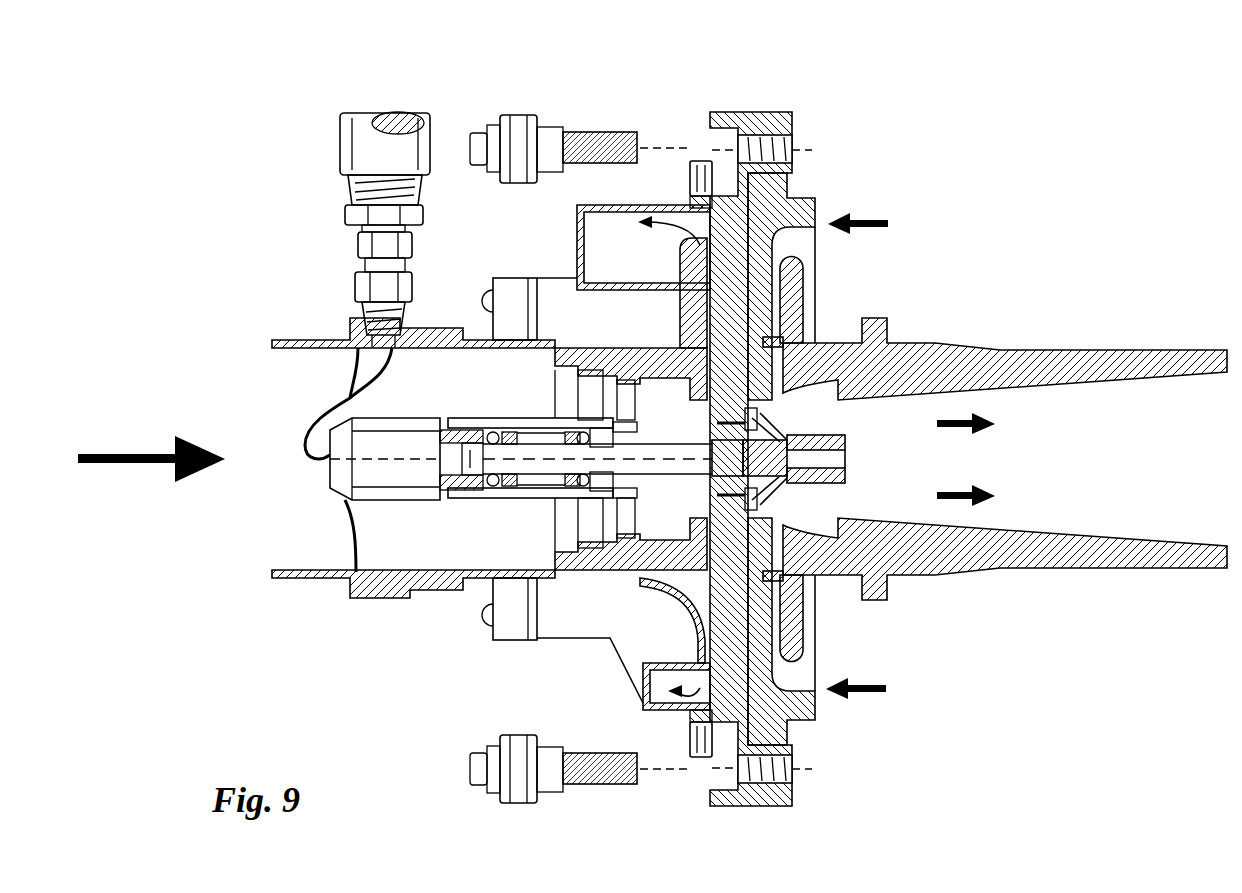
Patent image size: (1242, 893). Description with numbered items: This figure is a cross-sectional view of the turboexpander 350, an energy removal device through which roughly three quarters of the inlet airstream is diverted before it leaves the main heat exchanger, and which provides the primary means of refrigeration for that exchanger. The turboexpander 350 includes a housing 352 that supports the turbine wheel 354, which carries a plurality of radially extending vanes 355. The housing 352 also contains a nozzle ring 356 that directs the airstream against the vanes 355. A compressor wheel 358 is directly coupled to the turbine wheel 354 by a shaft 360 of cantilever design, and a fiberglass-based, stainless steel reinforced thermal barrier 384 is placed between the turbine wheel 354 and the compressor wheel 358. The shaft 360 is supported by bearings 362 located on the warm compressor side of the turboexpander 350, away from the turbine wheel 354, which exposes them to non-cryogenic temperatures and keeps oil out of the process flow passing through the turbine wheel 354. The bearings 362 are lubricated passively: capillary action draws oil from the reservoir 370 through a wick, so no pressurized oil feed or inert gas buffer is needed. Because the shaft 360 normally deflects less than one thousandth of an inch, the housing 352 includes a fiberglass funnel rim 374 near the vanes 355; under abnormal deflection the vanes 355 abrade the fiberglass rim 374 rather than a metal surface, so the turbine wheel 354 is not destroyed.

The turboexpander 350 is at (968, 82).
The housing 352 is at (780, 792).
The turbine wheel 354 is at (787, 425).
The vanes 355 is at (803, 505).
The nozzle ring 356 is at (777, 300).
The compressor wheel 358 is at (672, 578).
The shaft 360 is at (704, 470).
The bearings 362 is at (553, 468).
The reservoir 370 is at (512, 622).
The fiberglass rim 374 is at (793, 345).
The thermal barrier 384 is at (730, 243).